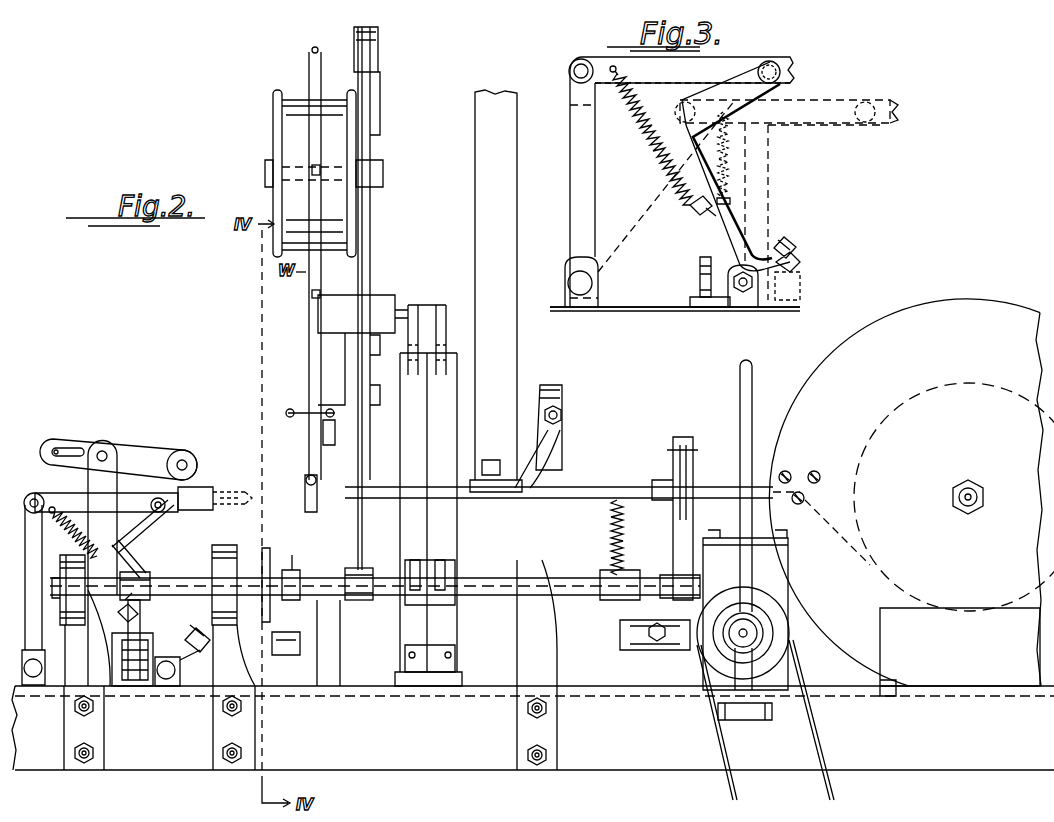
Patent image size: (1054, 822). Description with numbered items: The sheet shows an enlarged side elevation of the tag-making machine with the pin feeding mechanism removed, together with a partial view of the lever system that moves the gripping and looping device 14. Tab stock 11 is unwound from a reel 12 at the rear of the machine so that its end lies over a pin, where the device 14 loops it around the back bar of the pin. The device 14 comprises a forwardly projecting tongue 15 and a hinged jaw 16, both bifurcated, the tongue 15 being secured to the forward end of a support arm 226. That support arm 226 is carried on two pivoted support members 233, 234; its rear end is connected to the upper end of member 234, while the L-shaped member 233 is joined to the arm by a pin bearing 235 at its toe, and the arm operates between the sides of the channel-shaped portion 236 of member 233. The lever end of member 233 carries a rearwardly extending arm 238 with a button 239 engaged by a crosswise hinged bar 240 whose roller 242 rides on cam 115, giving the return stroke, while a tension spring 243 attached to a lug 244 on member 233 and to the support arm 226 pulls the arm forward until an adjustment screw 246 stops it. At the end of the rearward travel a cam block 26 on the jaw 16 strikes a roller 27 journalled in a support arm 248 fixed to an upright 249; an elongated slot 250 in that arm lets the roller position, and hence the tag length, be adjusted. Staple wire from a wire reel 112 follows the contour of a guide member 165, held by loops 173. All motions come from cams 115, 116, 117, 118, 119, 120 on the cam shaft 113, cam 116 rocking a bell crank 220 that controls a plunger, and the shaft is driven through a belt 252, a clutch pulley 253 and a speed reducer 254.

In FIG. 2, the tab stock 11 is at (596, 487).
In FIG. 2, the reel 12 is at (968, 354).
In FIG. 2, the gripping and looping device 14 is at (180, 533).
In FIG. 2, the tongue 15 is at (236, 504).
In FIG. 2, the hinged jaw 16 is at (218, 495).
In FIG. 2, the cam block 26 is at (202, 488).
In FIG. 2, the roller 27 is at (186, 452).
In FIG. 2, the wire reel 112 is at (272, 122).
In FIG. 2, the cam shaft 113 is at (195, 578).
In FIG. 2, the cam 115 is at (138, 606).
In FIG. 2, the cam 116 is at (300, 488).
In FIG. 2, the cam 117 is at (292, 568).
In FIG. 2, the cam 118 is at (332, 600).
In FIG. 2, the cam 119 is at (410, 578).
In FIG. 2, the cam 120 is at (450, 578).
In FIG. 2, the guide member 165 is at (300, 362).
In FIG. 2, the loops 173 is at (311, 50).
In FIG. 2, the bell crank 220 is at (272, 650).
In FIG. 2, the support arm 226 is at (76, 497).
In FIG. 3, the support arm 226 is at (720, 64).
In FIG. 2, the support member 233 is at (122, 560).
In FIG. 3, the support member 233 is at (718, 222).
In FIG. 2, the support member 234 is at (28, 552).
In FIG. 3, the support member 234 is at (618, 195).
In FIG. 3, the pin bearing 235 is at (782, 72).
In FIG. 2, the channel portion 236 is at (128, 525).
In FIG. 3, the channel portion 236 is at (772, 100).
In FIG. 3, the rearwardly extending arm 238 is at (714, 312).
In FIG. 3, the button 239 is at (700, 298).
In FIG. 3, the bar 240 is at (700, 278).
In FIG. 2, the roller 242 is at (132, 682).
In FIG. 3, the tension spring 243 is at (646, 135).
In FIG. 2, the lug 244 is at (140, 616).
In FIG. 3, the lug 244 is at (690, 212).
In FIG. 2, the adjustment screw 246 is at (204, 665).
In FIG. 3, the adjustment screw 246 is at (788, 250).
In FIG. 2, the support arm 248 is at (135, 446).
In FIG. 2, the upright 249 is at (118, 489).
In FIG. 2, the elongated slot 250 is at (72, 449).
In FIG. 2, the belt 252 is at (822, 742).
In FIG. 2, the clutch pulley 253 is at (780, 650).
In FIG. 2, the speed reducer 254 is at (736, 566).